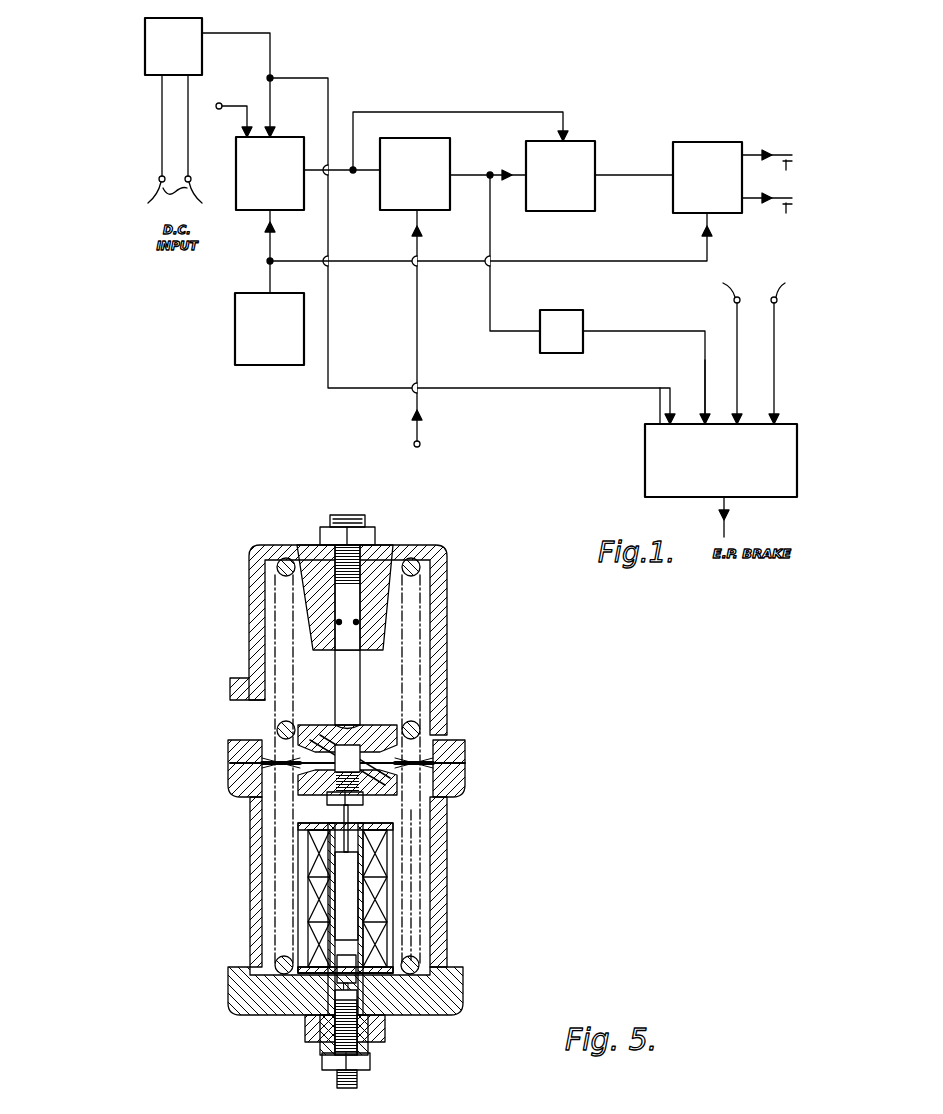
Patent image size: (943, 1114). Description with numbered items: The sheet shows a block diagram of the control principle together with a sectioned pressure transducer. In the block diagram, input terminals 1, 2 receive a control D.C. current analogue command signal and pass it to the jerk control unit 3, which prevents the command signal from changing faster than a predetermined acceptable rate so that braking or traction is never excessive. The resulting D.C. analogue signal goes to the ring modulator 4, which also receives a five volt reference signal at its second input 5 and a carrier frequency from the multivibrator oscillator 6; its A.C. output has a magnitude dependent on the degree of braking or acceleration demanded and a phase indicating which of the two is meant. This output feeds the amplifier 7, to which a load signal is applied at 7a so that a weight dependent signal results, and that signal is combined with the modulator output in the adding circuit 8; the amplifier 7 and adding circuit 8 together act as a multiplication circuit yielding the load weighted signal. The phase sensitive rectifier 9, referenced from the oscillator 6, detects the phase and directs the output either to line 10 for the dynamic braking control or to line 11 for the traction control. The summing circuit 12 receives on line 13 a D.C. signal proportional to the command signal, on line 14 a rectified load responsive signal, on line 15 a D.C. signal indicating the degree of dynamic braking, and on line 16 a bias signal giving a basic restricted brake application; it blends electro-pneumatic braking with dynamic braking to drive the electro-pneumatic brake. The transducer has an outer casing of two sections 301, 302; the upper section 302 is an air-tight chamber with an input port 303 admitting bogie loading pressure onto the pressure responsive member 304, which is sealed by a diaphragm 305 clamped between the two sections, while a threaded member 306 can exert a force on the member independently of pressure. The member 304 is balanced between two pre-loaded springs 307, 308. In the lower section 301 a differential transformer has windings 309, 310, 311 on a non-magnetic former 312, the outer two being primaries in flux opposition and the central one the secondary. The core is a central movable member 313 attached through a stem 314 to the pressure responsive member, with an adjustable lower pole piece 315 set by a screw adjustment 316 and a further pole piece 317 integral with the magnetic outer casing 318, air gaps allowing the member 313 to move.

In FIG. 1, the input terminal 1 is at (151, 146).
In FIG. 1, the input terminal 2 is at (187, 146).
In FIG. 1, the jerk control unit 3 is at (195, 22).
In FIG. 1, the ring modulator 4 is at (285, 140).
In FIG. 1, the second input 5 is at (219, 103).
In FIG. 1, the multivibrator oscillator 6 is at (244, 293).
In FIG. 1, the amplifier 7 is at (440, 143).
In FIG. 1, the load signal input 7a is at (421, 440).
In FIG. 1, the adding circuit 8 is at (583, 147).
In FIG. 1, the phase sensitive rectifier 9 is at (730, 145).
In FIG. 1, the line 10 is at (767, 167).
In FIG. 1, the line 11 is at (767, 210).
In FIG. 1, the summing circuit 12 is at (657, 466).
In FIG. 1, the line 13 is at (660, 400).
In FIG. 1, the line 14 is at (705, 372).
In FIG. 1, the line 15 is at (737, 390).
In FIG. 1, the line 16 is at (779, 390).
In FIG. 5, the casing section 301 is at (440, 901).
In FIG. 5, the casing section 302 is at (447, 599).
In FIG. 5, the input port 303 is at (238, 720).
In FIG. 5, the pressure responsive member 304 is at (313, 727).
In FIG. 5, the diaphragm 305 is at (418, 757).
In FIG. 5, the threaded member 306 is at (360, 575).
In FIG. 5, the spring 307 is at (422, 652).
In FIG. 5, the spring 308 is at (421, 863).
In FIG. 5, the winding 309 is at (313, 860).
In FIG. 5, the winding 310 is at (309, 897).
In FIG. 5, the winding 311 is at (309, 938).
In FIG. 5, the non-magnetic former 312 is at (328, 950).
In FIG. 5, the central movable member 313 is at (348, 927).
In FIG. 5, the stem 314 is at (355, 818).
In FIG. 5, the lower pole piece 315 is at (384, 1012).
In FIG. 5, the screw adjustment 316 is at (362, 1082).
In FIG. 5, the pole piece 317 is at (338, 818).
In FIG. 5, the outer casing 318 is at (303, 838).